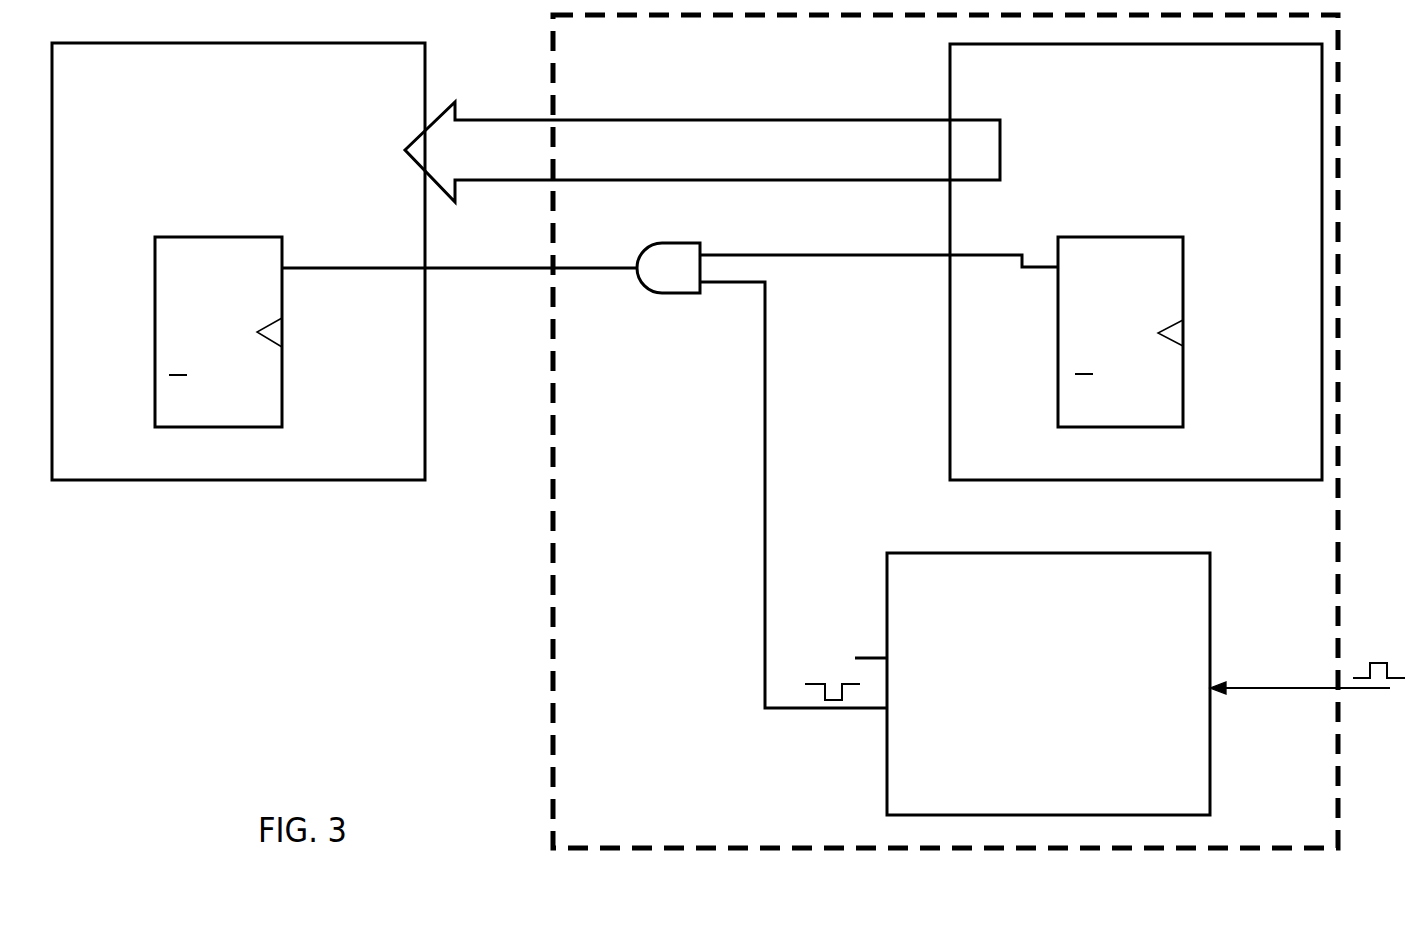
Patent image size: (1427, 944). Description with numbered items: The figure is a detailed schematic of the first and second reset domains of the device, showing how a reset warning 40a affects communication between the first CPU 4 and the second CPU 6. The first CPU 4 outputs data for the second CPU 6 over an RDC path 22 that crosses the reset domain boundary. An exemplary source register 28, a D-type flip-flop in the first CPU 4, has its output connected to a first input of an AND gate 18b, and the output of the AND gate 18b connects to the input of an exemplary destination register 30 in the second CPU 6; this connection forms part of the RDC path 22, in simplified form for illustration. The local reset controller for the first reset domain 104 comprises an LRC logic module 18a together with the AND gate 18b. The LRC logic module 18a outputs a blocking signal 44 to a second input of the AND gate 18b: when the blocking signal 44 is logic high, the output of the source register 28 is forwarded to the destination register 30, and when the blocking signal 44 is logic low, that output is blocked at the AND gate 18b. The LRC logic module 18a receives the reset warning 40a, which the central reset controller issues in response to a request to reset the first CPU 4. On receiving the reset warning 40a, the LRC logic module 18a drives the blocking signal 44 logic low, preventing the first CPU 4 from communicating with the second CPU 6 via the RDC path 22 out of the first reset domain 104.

The first reset domain 104 is at (552, 663).
The second CPU 6 is at (117, 105).
The first CPU 4 is at (1063, 97).
The RDC path 22 is at (630, 117).
The destination register 30 is at (204, 347).
The source register 28 is at (1102, 348).
The AND gate 18b is at (668, 272).
The LRC logic module 18a is at (962, 600).
The blocking signal 44 is at (820, 678).
The reset warning 40a is at (1377, 662).